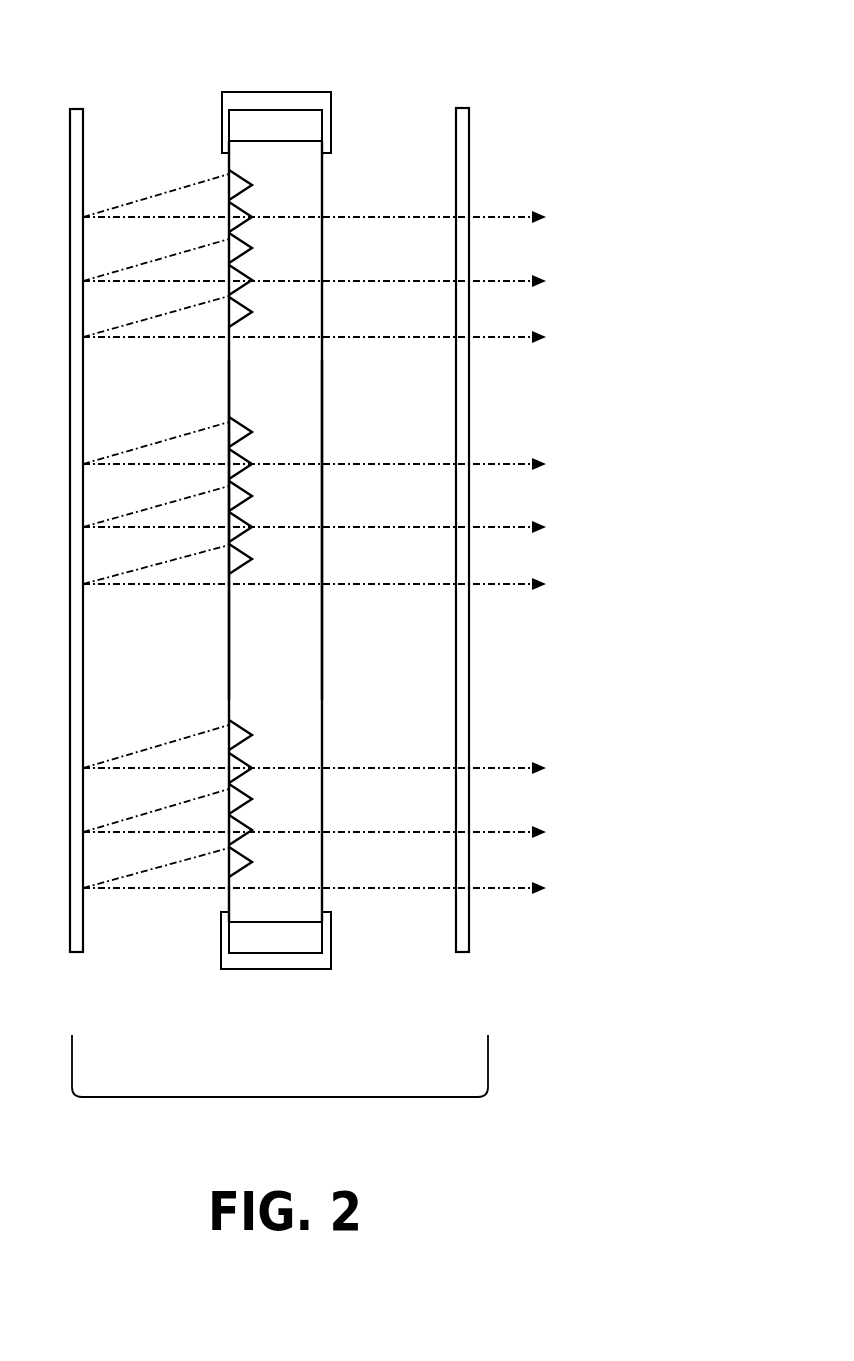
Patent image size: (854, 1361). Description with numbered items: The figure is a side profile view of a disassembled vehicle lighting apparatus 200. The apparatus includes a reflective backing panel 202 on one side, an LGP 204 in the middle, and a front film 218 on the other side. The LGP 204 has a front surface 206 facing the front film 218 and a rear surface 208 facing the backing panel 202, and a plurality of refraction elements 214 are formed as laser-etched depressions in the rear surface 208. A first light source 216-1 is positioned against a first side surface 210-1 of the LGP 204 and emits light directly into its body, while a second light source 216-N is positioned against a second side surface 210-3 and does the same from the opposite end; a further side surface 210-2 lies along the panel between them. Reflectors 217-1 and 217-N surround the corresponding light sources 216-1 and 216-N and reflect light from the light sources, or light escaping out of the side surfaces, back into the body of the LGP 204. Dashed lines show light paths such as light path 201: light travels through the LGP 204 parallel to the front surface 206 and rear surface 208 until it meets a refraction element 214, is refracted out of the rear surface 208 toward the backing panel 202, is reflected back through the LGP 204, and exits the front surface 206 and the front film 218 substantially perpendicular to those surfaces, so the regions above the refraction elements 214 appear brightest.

The vehicle lighting apparatus 200 is at (269, 1097).
The light path 201 is at (517, 215).
The reflective backing panel 202 is at (79, 108).
The LGP 204 is at (281, 549).
The front surface 206 is at (323, 200).
The rear surface 208 is at (228, 167).
The first side surface 210-1 is at (300, 140).
The side surface 210-2 is at (283, 375).
The second side surface 210-3 is at (307, 922).
The refraction elements 214 is at (243, 182).
The first light source 216-1 is at (283, 110).
The second light source 216-N is at (285, 955).
The reflector 217-1 is at (237, 91).
The reflector 217-N is at (242, 971).
The front film 218 is at (467, 108).